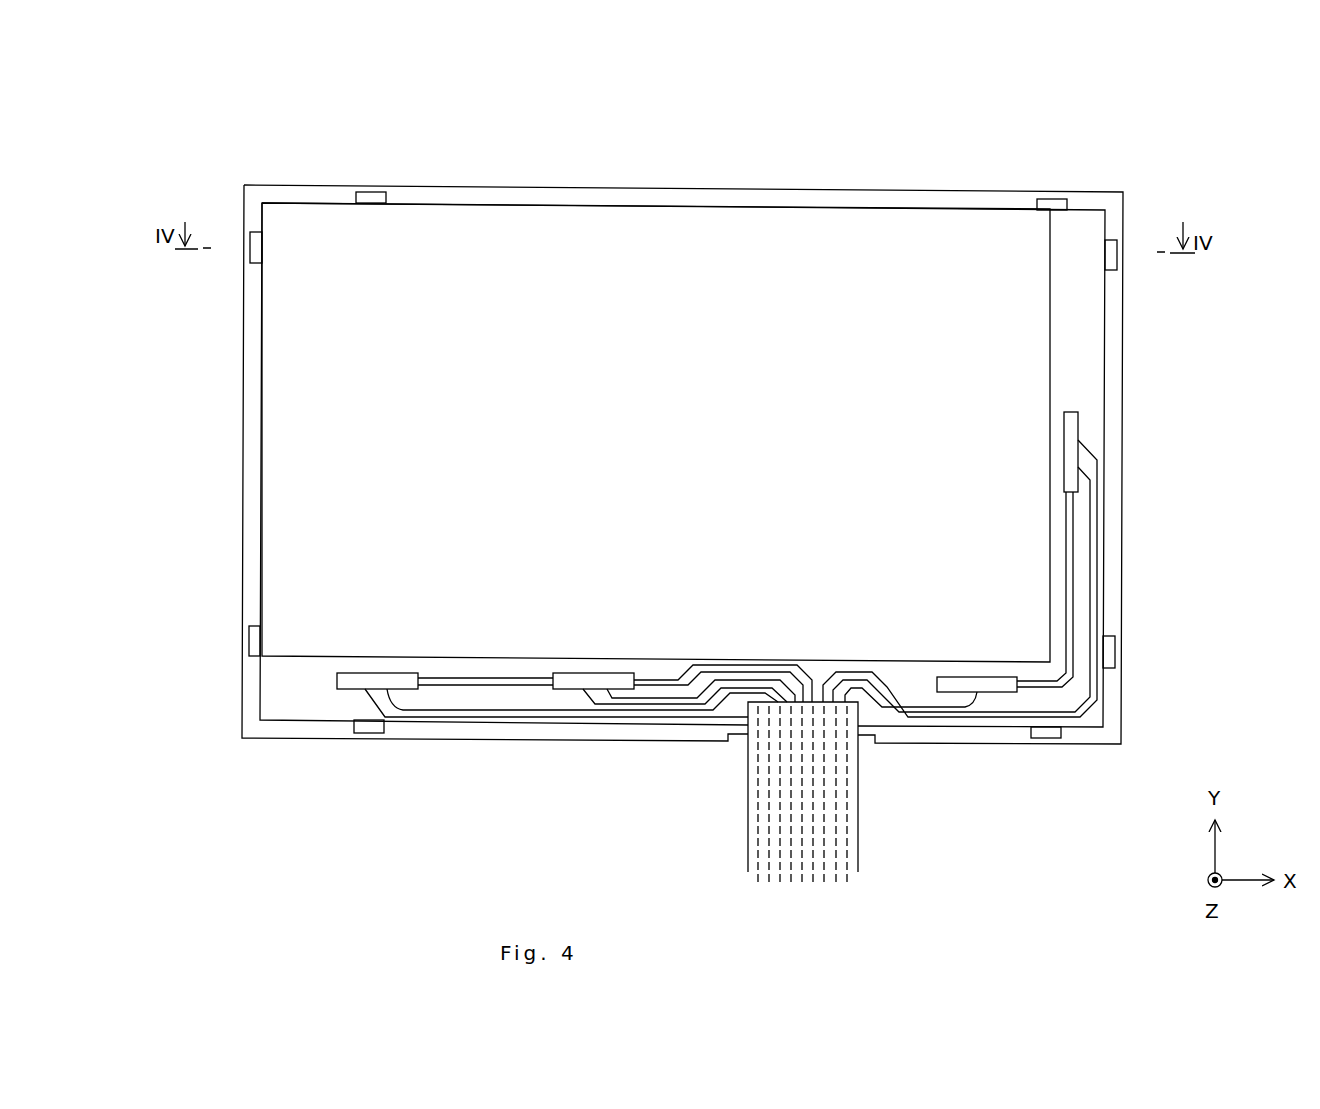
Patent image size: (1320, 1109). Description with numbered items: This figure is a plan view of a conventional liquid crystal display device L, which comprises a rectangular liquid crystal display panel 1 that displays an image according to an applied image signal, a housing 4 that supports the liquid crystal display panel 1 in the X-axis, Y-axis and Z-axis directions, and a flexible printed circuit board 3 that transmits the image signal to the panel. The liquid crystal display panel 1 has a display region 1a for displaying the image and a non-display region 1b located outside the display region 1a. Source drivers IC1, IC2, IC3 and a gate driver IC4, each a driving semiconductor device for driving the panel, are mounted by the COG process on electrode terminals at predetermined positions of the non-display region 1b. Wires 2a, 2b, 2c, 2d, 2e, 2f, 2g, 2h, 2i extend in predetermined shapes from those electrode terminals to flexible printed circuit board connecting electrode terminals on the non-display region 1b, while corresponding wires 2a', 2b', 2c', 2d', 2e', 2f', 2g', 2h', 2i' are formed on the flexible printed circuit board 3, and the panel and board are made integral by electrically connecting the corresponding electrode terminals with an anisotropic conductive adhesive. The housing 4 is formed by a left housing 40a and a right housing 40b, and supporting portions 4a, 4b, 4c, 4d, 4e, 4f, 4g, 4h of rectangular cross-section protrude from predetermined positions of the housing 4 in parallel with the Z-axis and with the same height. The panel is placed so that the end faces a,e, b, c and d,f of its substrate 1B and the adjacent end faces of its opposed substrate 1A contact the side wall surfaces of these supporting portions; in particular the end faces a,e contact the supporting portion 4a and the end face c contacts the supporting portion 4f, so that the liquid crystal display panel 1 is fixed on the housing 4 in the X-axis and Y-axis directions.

The liquid crystal display device L is at (736, 142).
The liquid crystal display panel 1 is at (516, 200).
The opposed substrate 1A is at (1025, 353).
The substrate 1B is at (1085, 394).
The display region 1a is at (570, 234).
The non-display region 1b is at (1078, 237).
The housing 4 is at (895, 201).
The supporting portion 4a is at (252, 250).
The supporting portion 4b is at (252, 646).
The supporting portion 4c is at (365, 733).
The supporting portion 4d is at (1045, 739).
The supporting portion 4e is at (1108, 657).
The supporting portion 4f is at (1113, 258).
The supporting portion 4g is at (1053, 199).
The supporting portion 4h is at (371, 192).
The left housing 40a is at (250, 505).
The right housing 40b is at (1112, 483).
The end faces a,e is at (255, 404).
The end face b is at (475, 722).
The end face c is at (1103, 435).
The end faces d,f is at (967, 207).
The source driver IC1 is at (352, 678).
The source driver IC2 is at (575, 682).
The source driver IC3 is at (957, 682).
The gate driver IC4 is at (1070, 423).
The wire 2a is at (1026, 578).
The wire 2b is at (1123, 589).
The wire 2c is at (911, 639).
The wire 2d is at (723, 636).
The wire 2e is at (718, 636).
The wire 2f is at (701, 636).
The wire 2g is at (685, 761).
The wire 2h is at (582, 761).
The wire 2i is at (556, 761).
The flexible printed circuit board 3 is at (866, 761).
The wire 2a' is at (897, 794).
The wire 2b' is at (892, 797).
The wire 2c' is at (870, 814).
The wire 2d' is at (846, 824).
The wire 2e' is at (821, 832).
The wire 2f' is at (777, 832).
The wire 2g' is at (751, 824).
The wire 2h' is at (726, 813).
The wire 2i' is at (710, 797).